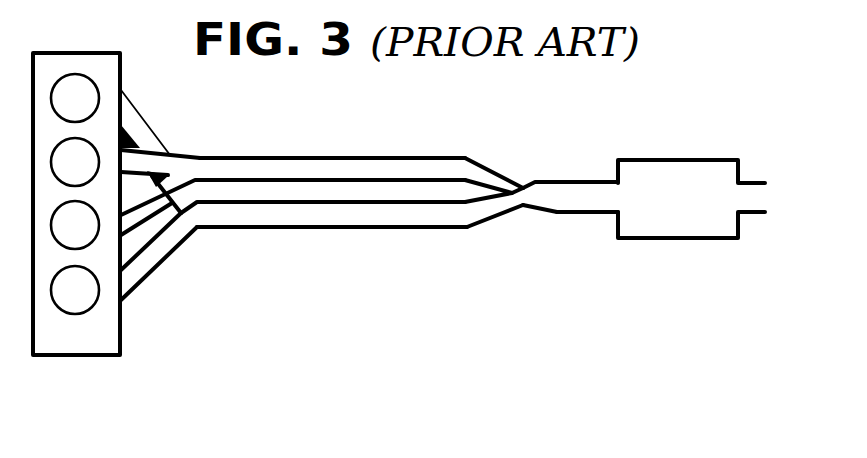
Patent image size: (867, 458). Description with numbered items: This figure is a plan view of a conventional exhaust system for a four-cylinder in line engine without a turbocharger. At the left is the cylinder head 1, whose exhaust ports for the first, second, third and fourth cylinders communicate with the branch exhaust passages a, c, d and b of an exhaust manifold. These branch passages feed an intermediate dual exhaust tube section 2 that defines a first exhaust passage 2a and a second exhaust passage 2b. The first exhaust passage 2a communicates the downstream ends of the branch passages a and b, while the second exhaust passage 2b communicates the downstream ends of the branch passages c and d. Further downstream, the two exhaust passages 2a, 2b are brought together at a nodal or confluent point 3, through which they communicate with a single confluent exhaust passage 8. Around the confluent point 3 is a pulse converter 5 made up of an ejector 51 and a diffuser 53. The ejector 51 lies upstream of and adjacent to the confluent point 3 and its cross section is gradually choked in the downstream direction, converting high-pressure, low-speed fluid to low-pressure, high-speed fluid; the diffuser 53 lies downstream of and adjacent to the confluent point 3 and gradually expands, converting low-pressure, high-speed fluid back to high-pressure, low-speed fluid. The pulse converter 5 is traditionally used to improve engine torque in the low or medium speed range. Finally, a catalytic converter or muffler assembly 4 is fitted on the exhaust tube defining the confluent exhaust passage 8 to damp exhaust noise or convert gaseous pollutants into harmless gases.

The cylinder head 1 is at (100, 53).
The branch exhaust passage a is at (143, 125).
The branch exhaust passage b is at (157, 265).
The branch exhaust passage c is at (162, 158).
The branch exhaust passage d is at (168, 200).
The dual exhaust tube section 2 is at (294, 192).
The first exhaust passage 2a is at (310, 218).
The second exhaust passage 2b is at (393, 175).
The pulse converter 5 is at (514, 189).
The ejector 51 is at (465, 229).
The diffuser 53 is at (528, 229).
The confluent point 3 is at (525, 189).
The confluent exhaust passage 8 is at (603, 212).
The catalytic converter or muffler assembly 4 is at (678, 160).